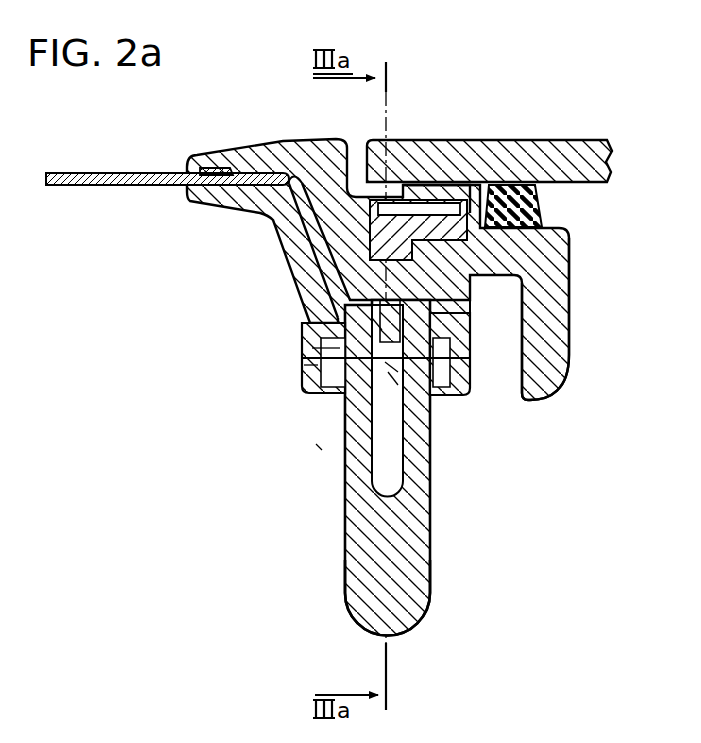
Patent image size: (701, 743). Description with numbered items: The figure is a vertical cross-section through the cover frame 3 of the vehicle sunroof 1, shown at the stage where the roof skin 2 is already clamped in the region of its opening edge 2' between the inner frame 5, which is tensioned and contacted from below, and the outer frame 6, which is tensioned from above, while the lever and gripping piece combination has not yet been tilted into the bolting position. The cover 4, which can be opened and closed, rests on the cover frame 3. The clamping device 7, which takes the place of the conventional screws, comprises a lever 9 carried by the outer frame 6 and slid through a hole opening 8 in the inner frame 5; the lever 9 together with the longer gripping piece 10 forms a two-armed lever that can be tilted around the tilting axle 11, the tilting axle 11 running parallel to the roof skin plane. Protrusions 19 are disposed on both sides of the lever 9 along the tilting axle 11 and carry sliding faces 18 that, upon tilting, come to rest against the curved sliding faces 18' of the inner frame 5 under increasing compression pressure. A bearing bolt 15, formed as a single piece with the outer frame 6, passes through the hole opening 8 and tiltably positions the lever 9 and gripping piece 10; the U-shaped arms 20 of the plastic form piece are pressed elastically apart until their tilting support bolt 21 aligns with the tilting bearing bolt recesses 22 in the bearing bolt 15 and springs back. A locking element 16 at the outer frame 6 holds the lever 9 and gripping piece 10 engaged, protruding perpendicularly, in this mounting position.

The sunroof 1 is at (580, 108).
The roof skin 2 is at (167, 132).
The opening edge 2' is at (235, 118).
The cover frame 3 is at (296, 128).
The cover 4 is at (505, 156).
The inner frame 5 is at (224, 209).
The outer frame 6 is at (547, 280).
The clamping device 7 is at (312, 450).
The hole opening 8 is at (428, 458).
The lever 9 is at (306, 366).
The gripping piece 10 is at (413, 563).
The tilting axle 11 is at (318, 352).
The bearing bolt 15 is at (378, 320).
The locking element 16 is at (462, 327).
The sliding face 18 is at (423, 311).
The sliding face 18' is at (388, 389).
The protrusion 19 is at (362, 392).
The U-shaped arm 20 is at (358, 464).
The tilting support bolt 21 is at (398, 348).
The tilting bearing bolt recess 22 is at (398, 368).